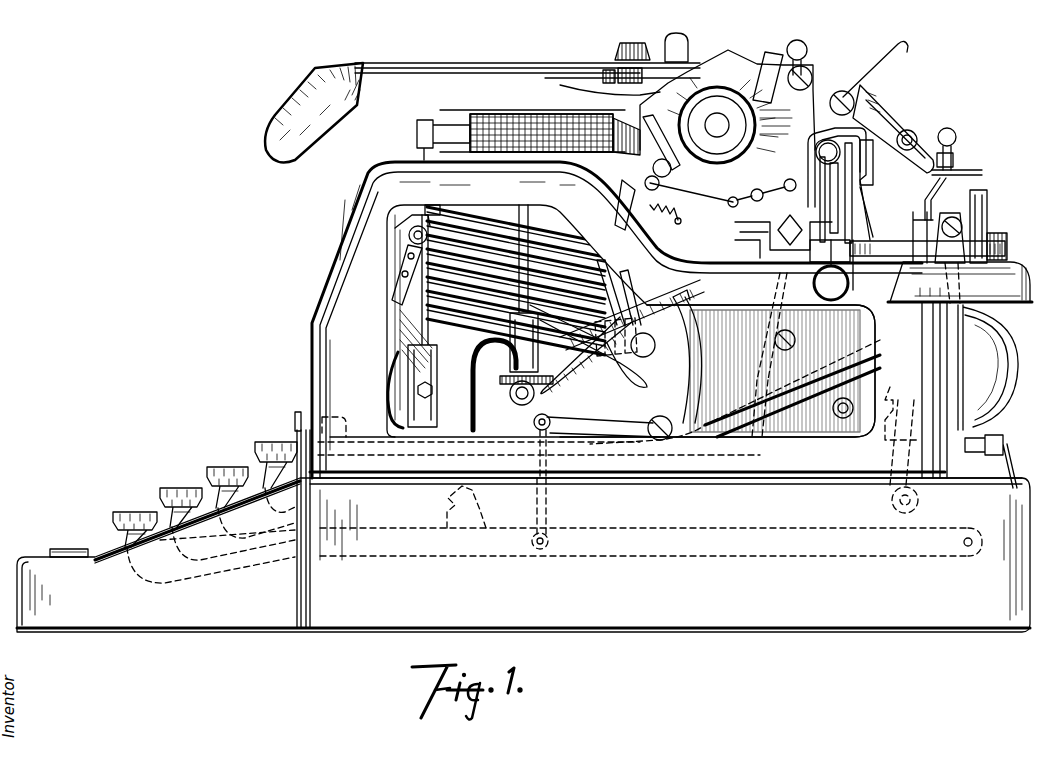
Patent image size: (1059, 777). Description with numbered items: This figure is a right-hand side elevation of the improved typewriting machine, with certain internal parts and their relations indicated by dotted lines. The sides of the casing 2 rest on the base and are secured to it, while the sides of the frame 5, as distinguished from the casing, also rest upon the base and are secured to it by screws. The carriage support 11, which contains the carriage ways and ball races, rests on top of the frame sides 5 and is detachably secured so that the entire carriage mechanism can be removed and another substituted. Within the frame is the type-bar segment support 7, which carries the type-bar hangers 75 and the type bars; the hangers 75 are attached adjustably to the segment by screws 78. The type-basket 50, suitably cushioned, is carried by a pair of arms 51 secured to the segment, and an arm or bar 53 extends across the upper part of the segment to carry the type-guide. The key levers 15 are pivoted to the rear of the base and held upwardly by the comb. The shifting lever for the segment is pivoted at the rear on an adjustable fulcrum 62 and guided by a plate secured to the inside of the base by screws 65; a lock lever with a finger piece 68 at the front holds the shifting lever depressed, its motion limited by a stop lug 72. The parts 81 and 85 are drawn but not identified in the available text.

The sides of the casing 2 is at (347, 270).
The sides of the frame 5 is at (822, 433).
The type-bar segment support 7 is at (602, 379).
The carriage support 11 is at (880, 287).
The key levers 15 is at (275, 473).
The type-basket 50 is at (410, 260).
The arms 51 is at (515, 280).
The arm or bar 53 is at (622, 180).
The adjustable fulcrum 62 is at (779, 190).
The screws 65 is at (834, 236).
The finger piece 68 is at (63, 548).
The stop lug 72 is at (883, 117).
The type-bar hangers 75 is at (629, 288).
The screws 78 is at (611, 281).
The rod 81 is at (470, 222).
The disk 85 is at (634, 342).